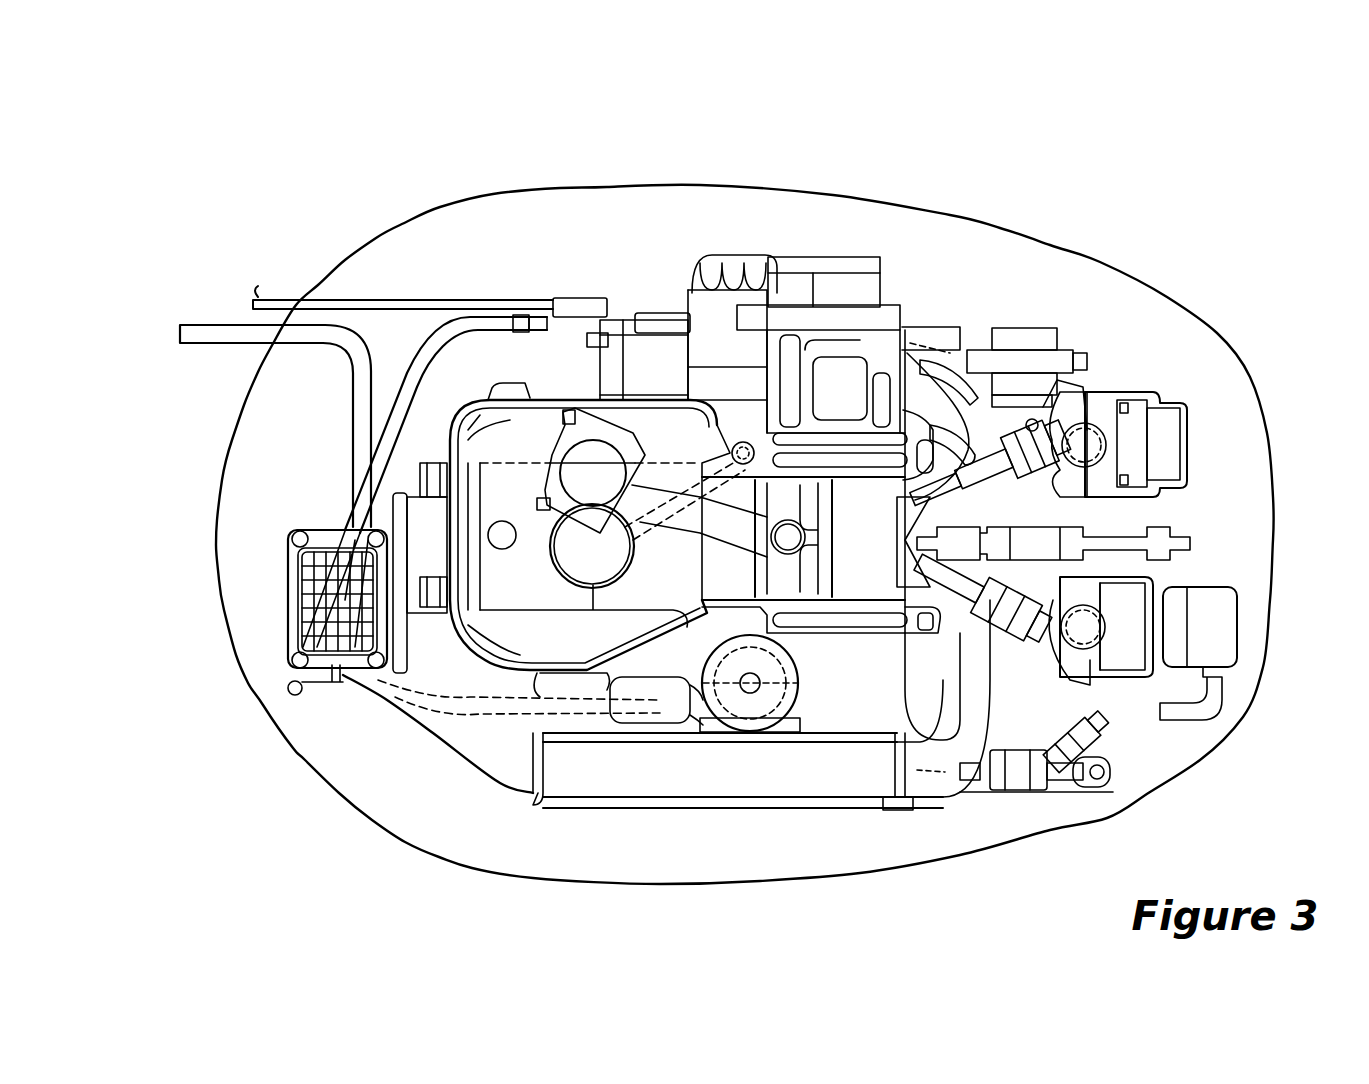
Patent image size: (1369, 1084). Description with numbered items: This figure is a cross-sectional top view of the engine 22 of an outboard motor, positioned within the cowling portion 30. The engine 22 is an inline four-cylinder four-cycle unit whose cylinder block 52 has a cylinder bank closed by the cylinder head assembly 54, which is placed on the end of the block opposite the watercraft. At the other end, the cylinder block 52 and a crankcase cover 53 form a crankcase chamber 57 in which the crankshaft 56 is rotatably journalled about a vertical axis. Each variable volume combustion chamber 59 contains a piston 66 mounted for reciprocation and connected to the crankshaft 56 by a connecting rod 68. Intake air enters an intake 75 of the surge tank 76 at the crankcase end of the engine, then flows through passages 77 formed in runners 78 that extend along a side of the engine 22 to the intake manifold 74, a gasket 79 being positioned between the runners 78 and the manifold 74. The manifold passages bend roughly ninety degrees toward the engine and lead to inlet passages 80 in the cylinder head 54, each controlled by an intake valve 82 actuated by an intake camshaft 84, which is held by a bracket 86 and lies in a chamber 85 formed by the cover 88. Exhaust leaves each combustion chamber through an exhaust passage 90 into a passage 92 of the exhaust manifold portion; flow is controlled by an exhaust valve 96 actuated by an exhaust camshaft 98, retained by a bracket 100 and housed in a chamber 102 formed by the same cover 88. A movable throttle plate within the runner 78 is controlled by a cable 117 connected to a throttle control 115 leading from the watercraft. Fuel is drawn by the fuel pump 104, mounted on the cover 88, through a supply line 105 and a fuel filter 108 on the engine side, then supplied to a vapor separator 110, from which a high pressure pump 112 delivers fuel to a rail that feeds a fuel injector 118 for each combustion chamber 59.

The engine 22 is at (627, 212).
The cowling portion 30 is at (832, 195).
The cylinder block 52 is at (767, 387).
The crankcase cover 53 is at (508, 397).
The cylinder head assembly 54 is at (953, 333).
The crankshaft 56 is at (572, 543).
The crankcase chamber 57 is at (530, 640).
The combustion chamber 59 is at (725, 580).
The piston 66 is at (770, 580).
The connecting rod 68 is at (633, 452).
The intake manifold 74 is at (940, 793).
The intake 75 is at (293, 590).
The surge tank 76 is at (287, 637).
The passage 77 is at (705, 787).
The runner 78 is at (512, 783).
The gasket 79 is at (900, 810).
The inlet passage 80 is at (953, 627).
The intake valve 82 is at (927, 560).
The intake camshaft 84 is at (1092, 740).
The chamber 85 is at (1143, 653).
The bracket 86 is at (1090, 625).
The cover 88 is at (1113, 383).
The exhaust passage 90 is at (917, 393).
The passage 92 is at (833, 383).
The exhaust valve 96 is at (903, 510).
The exhaust camshaft 98 is at (1090, 440).
The bracket 100 is at (1115, 455).
The chamber 102 is at (1160, 405).
The fuel pump 104 is at (1227, 633).
The supply line 105 is at (222, 337).
The fuel filter 108 is at (690, 700).
The vapor separator 110 is at (637, 690).
The high pressure pump 112 is at (763, 710).
The throttle control 115 is at (428, 300).
The cable 117 is at (398, 400).
The fuel injector 118 is at (1007, 750).